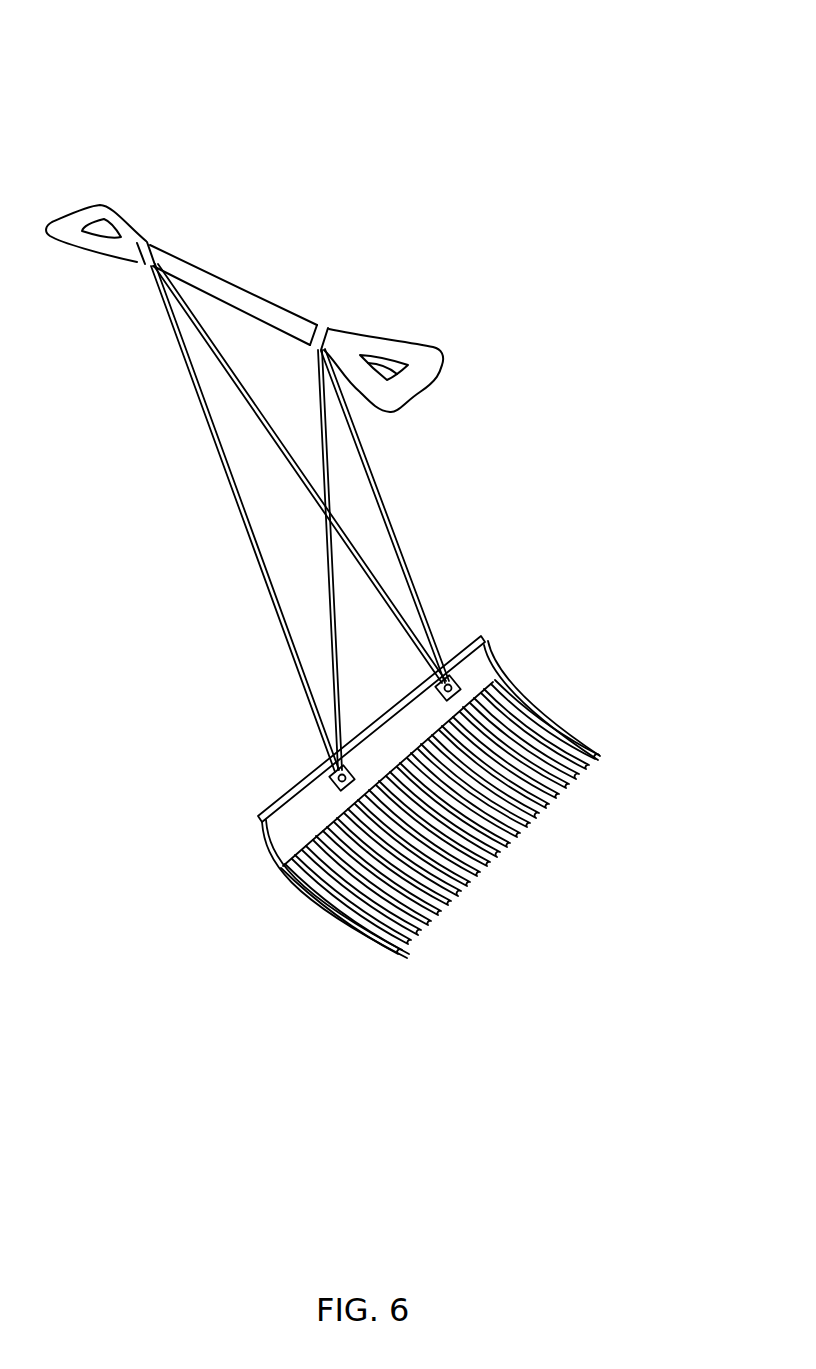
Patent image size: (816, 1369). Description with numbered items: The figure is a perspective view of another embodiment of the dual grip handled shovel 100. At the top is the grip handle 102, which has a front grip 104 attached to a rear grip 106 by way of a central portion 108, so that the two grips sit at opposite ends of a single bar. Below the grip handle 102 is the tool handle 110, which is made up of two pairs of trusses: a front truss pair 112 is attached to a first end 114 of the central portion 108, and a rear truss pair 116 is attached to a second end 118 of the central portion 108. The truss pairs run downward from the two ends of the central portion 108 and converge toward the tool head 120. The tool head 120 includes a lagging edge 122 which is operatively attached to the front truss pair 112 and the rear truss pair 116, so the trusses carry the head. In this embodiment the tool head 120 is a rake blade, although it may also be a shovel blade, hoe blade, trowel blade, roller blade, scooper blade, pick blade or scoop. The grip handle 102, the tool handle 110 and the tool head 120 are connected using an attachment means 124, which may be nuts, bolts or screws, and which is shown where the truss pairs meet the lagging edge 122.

The dual grip handled shovel 100 is at (350, 106).
The grip handle 102 is at (241, 266).
The front grip 104 is at (441, 345).
The rear grip 106 is at (78, 218).
The central portion 108 is at (281, 299).
The tool handle 110 is at (235, 552).
The front truss pair 112 is at (369, 475).
The first end 114 is at (317, 350).
The rear truss pair 116 is at (242, 395).
The second end 118 is at (150, 267).
The tool head 120 is at (312, 943).
The lagging edge 122 is at (284, 806).
The attachment means 124 is at (447, 675).